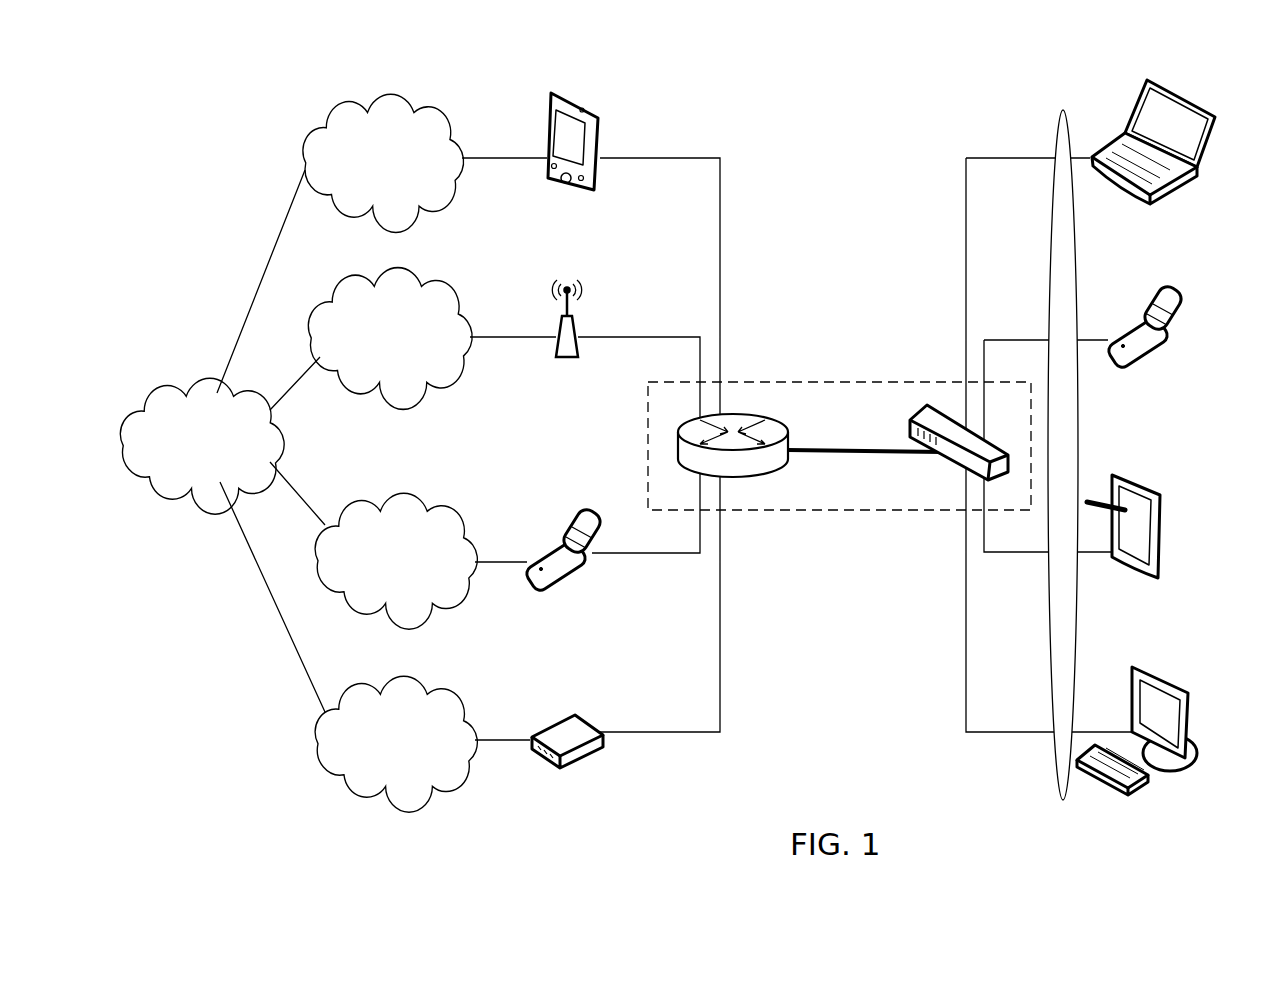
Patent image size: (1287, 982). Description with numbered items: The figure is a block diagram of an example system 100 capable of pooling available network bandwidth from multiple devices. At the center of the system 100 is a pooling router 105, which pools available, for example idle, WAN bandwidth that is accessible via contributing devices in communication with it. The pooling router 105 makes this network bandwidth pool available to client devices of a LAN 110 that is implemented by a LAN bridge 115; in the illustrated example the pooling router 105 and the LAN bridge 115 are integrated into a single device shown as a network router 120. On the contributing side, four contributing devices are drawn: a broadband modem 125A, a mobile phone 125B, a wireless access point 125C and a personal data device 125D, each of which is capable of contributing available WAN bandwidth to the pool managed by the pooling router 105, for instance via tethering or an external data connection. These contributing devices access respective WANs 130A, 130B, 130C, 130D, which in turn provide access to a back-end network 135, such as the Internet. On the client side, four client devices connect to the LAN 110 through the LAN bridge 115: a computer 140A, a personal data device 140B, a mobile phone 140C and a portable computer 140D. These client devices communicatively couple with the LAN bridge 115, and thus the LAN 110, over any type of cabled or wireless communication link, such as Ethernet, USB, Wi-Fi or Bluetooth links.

The system 100 is at (235, 80).
The pooling router 105 is at (780, 420).
The LAN 110 is at (1060, 116).
The LAN bridge 115 is at (952, 462).
The network router 120 is at (877, 382).
The broadband modem 125A is at (568, 717).
The mobile phone 125B is at (563, 515).
The wireless access point 125C is at (553, 290).
The personal data device 125D is at (548, 107).
The WAN 130A is at (396, 744).
The WAN 130B is at (396, 561).
The WAN 130C is at (390, 339).
The WAN 130D is at (383, 163).
The back-end network 135 is at (202, 446).
The computer 140A is at (1160, 677).
The personal data device 140B is at (1160, 495).
The mobile phone 140C is at (1168, 283).
The portable computer 140D is at (1172, 92).